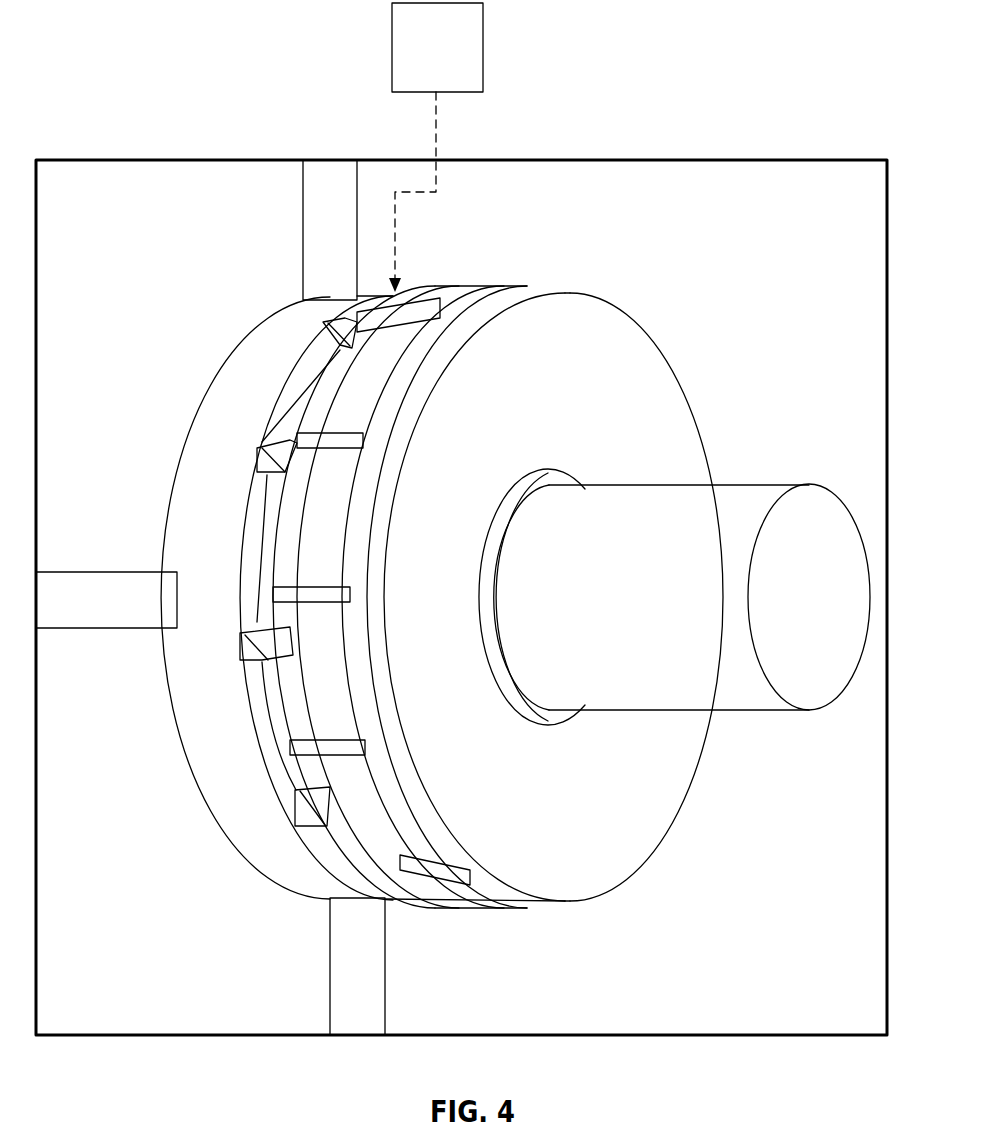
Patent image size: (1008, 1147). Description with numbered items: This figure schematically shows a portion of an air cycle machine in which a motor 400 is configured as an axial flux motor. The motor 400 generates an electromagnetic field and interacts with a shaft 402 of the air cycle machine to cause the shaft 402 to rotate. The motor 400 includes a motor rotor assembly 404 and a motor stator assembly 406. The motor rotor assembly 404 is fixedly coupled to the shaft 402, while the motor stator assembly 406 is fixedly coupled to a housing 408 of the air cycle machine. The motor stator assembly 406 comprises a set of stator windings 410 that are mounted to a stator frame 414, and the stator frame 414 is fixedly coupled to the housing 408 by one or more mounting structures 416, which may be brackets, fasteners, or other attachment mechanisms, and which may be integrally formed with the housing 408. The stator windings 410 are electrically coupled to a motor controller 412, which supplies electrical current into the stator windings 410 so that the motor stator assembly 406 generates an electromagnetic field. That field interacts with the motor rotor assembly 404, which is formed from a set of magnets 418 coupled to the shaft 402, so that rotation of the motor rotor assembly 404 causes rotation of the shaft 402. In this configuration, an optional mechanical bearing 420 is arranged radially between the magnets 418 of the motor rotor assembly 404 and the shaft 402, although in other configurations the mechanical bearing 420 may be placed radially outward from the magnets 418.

The motor 400 is at (177, 42).
The shaft 402 is at (752, 485).
The motor rotor assembly 404 is at (636, 313).
The motor stator assembly 406 is at (327, 598).
The housing 408 is at (128, 158).
The stator windings 410 is at (253, 518).
The motor controller 412 is at (461, 63).
The stator frame 414 is at (230, 388).
The mounting structures 416 is at (317, 225).
The magnets 418 is at (470, 283).
The mechanical bearing 420 is at (562, 475).